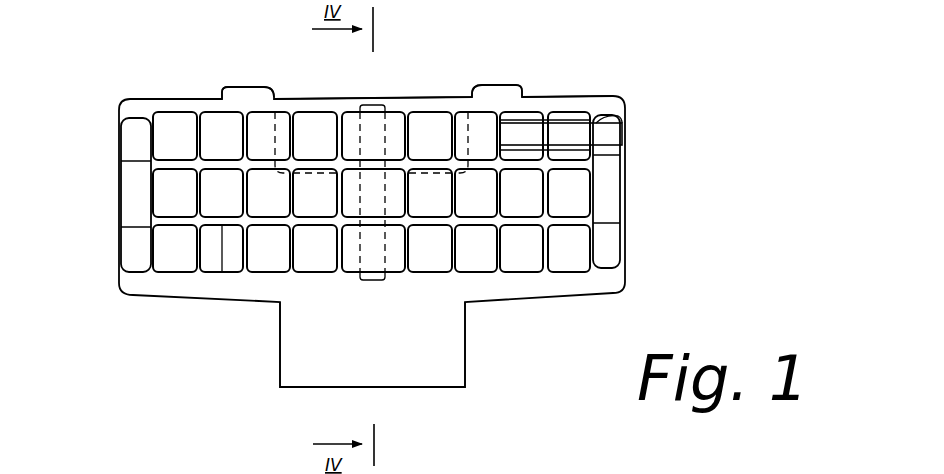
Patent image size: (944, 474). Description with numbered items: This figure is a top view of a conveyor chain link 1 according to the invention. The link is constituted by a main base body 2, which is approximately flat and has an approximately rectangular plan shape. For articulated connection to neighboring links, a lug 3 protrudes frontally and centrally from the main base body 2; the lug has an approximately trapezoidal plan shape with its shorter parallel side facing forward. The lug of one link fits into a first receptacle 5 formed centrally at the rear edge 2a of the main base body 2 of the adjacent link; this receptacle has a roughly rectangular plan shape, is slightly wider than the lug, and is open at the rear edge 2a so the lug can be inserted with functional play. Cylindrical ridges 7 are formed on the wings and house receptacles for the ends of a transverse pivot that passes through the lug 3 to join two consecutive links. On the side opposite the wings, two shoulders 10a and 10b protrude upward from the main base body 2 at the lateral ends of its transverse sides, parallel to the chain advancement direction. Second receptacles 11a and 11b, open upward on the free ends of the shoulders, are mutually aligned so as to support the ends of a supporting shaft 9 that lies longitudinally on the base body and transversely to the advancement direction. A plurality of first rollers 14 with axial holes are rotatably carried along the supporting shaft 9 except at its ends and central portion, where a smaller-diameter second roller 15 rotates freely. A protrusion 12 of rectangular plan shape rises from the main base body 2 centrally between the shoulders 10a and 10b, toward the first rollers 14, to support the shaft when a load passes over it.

The conveyor chain link 1 is at (745, 99).
The main base body 2 is at (536, 296).
The rear edge 2a is at (175, 96).
The lug 3 is at (440, 340).
The first receptacle 5 is at (437, 107).
The cylindrical ridge 7 is at (240, 84).
The supporting shaft 9 is at (574, 139).
The shoulder 10a is at (138, 231).
The shoulder 10b is at (610, 183).
The second receptacle 11a is at (131, 138).
The second receptacle 11b is at (623, 138).
The protrusion 12 is at (391, 101).
The first roller 14 is at (302, 110).
The second roller 15 is at (350, 107).